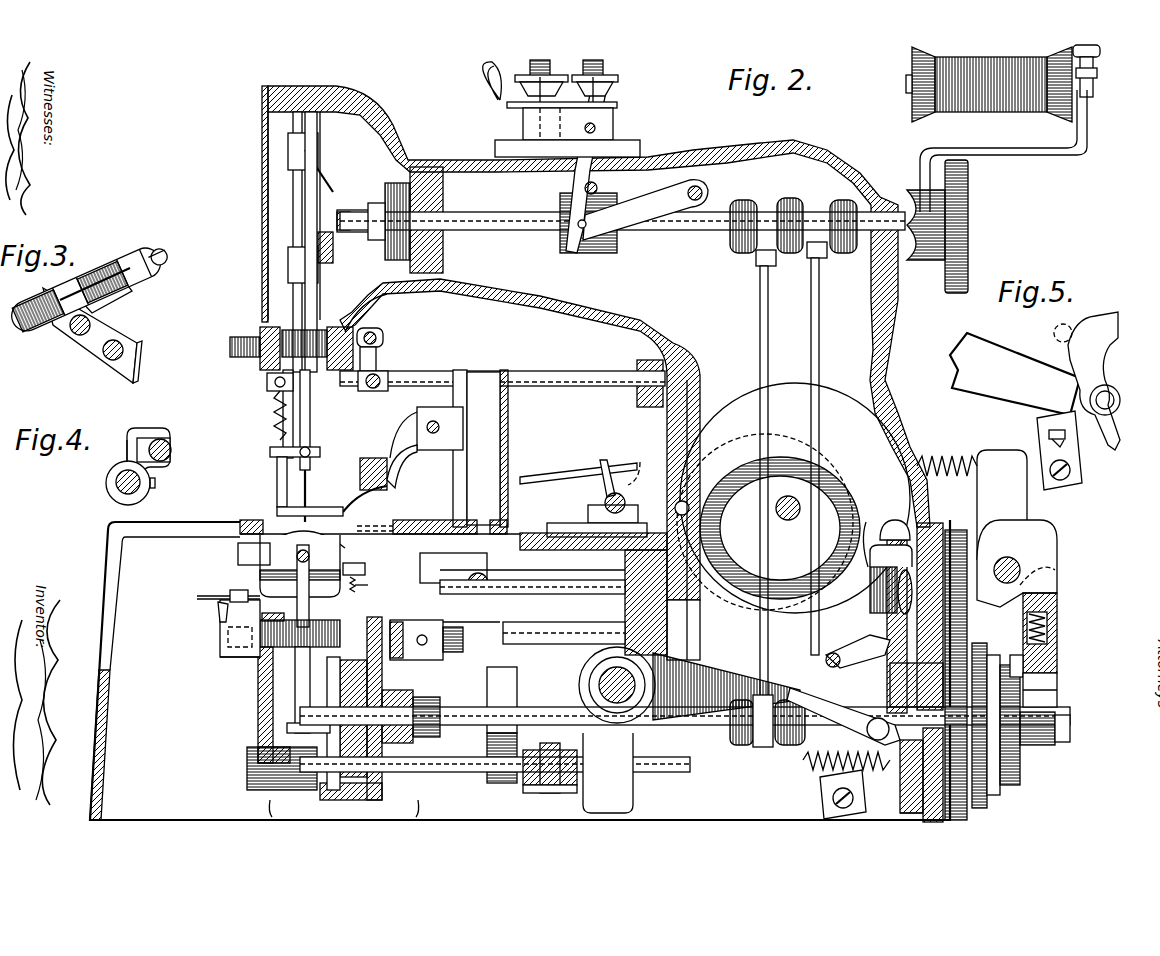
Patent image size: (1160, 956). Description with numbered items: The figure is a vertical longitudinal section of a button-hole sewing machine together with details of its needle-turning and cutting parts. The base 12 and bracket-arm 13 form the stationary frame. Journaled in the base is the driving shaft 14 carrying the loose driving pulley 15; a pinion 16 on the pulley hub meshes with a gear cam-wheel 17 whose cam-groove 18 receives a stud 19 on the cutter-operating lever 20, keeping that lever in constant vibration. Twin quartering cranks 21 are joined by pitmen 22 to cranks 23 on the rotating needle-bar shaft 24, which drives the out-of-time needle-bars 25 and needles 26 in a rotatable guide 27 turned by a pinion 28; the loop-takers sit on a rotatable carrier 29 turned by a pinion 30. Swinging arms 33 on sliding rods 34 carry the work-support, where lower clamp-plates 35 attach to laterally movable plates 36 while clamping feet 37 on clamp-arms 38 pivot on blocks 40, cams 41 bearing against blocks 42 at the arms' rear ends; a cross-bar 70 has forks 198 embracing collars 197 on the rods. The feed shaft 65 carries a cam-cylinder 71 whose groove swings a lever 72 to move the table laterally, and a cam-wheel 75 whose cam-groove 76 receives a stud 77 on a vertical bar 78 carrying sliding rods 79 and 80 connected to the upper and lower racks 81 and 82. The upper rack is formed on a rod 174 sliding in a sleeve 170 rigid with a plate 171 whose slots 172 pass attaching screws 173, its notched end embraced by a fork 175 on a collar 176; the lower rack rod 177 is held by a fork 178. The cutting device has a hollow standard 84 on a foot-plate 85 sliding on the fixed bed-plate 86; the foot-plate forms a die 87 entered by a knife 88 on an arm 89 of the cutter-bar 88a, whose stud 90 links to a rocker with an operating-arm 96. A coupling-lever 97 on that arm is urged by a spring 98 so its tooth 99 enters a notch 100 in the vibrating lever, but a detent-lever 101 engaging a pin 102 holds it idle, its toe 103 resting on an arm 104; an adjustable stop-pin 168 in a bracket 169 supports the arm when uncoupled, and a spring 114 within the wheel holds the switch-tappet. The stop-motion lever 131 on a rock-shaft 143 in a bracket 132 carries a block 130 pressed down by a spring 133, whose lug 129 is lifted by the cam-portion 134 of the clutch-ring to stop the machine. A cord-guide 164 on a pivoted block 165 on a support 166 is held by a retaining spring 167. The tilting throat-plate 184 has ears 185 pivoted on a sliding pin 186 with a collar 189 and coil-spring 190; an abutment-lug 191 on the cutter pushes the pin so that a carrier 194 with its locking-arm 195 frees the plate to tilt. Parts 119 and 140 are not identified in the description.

In FIG. 2, the base 12 is at (520, 670).
In FIG. 2, the bracket-arm 13 is at (596, 343).
In FIG. 2, the main or driving shaft 14 is at (1062, 735).
In FIG. 2, the driving pulley 15 is at (1000, 790).
In FIG. 2, the pinion 16 is at (916, 672).
In FIG. 2, the gear cam-wheel 17 is at (970, 625).
In FIG. 2, the cam-groove 18 is at (1002, 505).
In FIG. 2, the stud 19 is at (913, 555).
In FIG. 2, the cutter-operating lever 20 is at (868, 520).
In FIG. 2, the twin quartering cranks 21 is at (748, 749).
In FIG. 2, the pitmen 22 is at (769, 668).
In FIG. 2, the cranks 23 is at (832, 246).
In FIG. 2, the needle-bar shaft 24 is at (497, 231).
In FIG. 2, the needle-bars 25 is at (307, 214).
In FIG. 2, the needles 26 is at (309, 496).
In FIG. 2, the rotatable guide 27 is at (300, 186).
In FIG. 2, the pinion 28 is at (357, 317).
In FIG. 2, the rotatable carrier 29 is at (300, 700).
In FIG. 2, the pinion 30 is at (280, 653).
In FIG. 2, the swinging arms 33 is at (293, 768).
In FIG. 2, the sliding rods 34 is at (445, 780).
In FIG. 2, the lower clamp-plates 35 is at (245, 522).
In FIG. 2, the plates 36 is at (572, 522).
In FIG. 2, the clamping feet 37 is at (280, 524).
In FIG. 2, the clamp-arms 38 is at (360, 489).
In FIG. 2, the plates or blocks 40 is at (606, 504).
In FIG. 2, the cams 41 is at (635, 463).
In FIG. 2, the blocks 42 is at (603, 470).
In FIG. 2, the feed shaft 65 is at (797, 521).
In FIG. 2, the cross-bar 70 is at (545, 790).
In FIG. 2, the cam-cylinder 71 is at (765, 522).
In FIG. 2, the lever 72 is at (590, 584).
In FIG. 2, the cam-wheel 75 is at (868, 410).
In FIG. 2, the cam-groove 76 is at (722, 462).
In FIG. 2, the pin or stud 77 is at (690, 508).
In FIG. 2, the vertical bar 78 is at (700, 410).
In FIG. 4, the sliding rod 79 is at (143, 491).
In FIG. 2, the sliding rod 79 is at (572, 378).
In FIG. 2, the sliding rod 80 is at (585, 628).
In FIG. 3, the upper rack 81 is at (40, 327).
In FIG. 2, the upper rack 81 is at (240, 357).
In FIG. 2, the lower rack 82 is at (355, 625).
In FIG. 2, the hollow post or standard 84 is at (500, 446).
In FIG. 2, the foot-plate 85 is at (418, 522).
In FIG. 2, the bed-plate 86 is at (532, 569).
In FIG. 2, the throat or die 87 is at (375, 515).
In FIG. 2, the knife or cutter 88 is at (365, 462).
In FIG. 2, the cutter-bar 88a is at (505, 448).
In FIG. 2, the arm 89 is at (423, 432).
In FIG. 2, the stud 90 is at (472, 590).
In FIG. 5, the operating-arm 96 is at (1015, 374).
In FIG. 2, the operating-arm 96 is at (722, 678).
In FIG. 5, the coupling-lever 97 is at (1090, 352).
In FIG. 2, the spring 98 is at (835, 752).
In FIG. 2, the tooth or projection 99 is at (894, 616).
In FIG. 2, the notch 100 is at (891, 590).
In FIG. 2, the detent-lever 101 is at (845, 655).
In FIG. 5, the pin 102 is at (1053, 335).
In FIG. 2, the pin 102 is at (831, 664).
In FIG. 2, the toe 103 is at (882, 785).
In FIG. 2, the arm 104 is at (905, 800).
In FIG. 3, the spring 114 is at (168, 261).
In FIG. 2, the feed bar arm 119 is at (450, 628).
In FIG. 2, the lug or projection 129 is at (1012, 660).
In FIG. 2, the vertically movable block 130 is at (1057, 676).
In FIG. 2, the stop-motion lever 131 is at (1058, 603).
In FIG. 2, the bracket 132 is at (1030, 565).
In FIG. 2, the spring 133 is at (1055, 630).
In FIG. 2, the eccentric or cam-portion 134 is at (1057, 703).
In FIG. 2, the spring 140 is at (946, 463).
In FIG. 2, the rock-shaft 143 is at (1058, 566).
In FIG. 2, the cord-guide 164 is at (218, 605).
In FIG. 2, the block 165 is at (232, 628).
In FIG. 2, the support 166 is at (240, 657).
In FIG. 2, the retaining spring 167 is at (225, 620).
In FIG. 5, the adjustable stop-pin 168 is at (1047, 452).
In FIG. 5, the bracket 169 is at (1066, 490).
In FIG. 2, the bracket 169 is at (826, 792).
In FIG. 3, the sleeve 170 is at (115, 258).
In FIG. 3, the plate or arm 171 is at (95, 347).
In FIG. 3, the holes or slots 172 is at (118, 345).
In FIG. 2, the attaching screws 173 is at (266, 364).
In FIG. 4, the rod 174 is at (172, 450).
In FIG. 2, the rod 174 is at (385, 345).
In FIG. 4, the fork 175 is at (126, 449).
In FIG. 2, the fork 175 is at (380, 362).
In FIG. 4, the collar 176 is at (116, 484).
In FIG. 2, the collar 176 is at (373, 391).
In FIG. 2, the rod 177 is at (395, 655).
In FIG. 2, the fork 178 is at (430, 630).
In FIG. 2, the tilting needle throat-plate 184 is at (303, 530).
In FIG. 2, the ears 185 is at (197, 597).
In FIG. 2, the sliding pin 186 is at (364, 579).
In FIG. 2, the head or collar 189 is at (382, 576).
In FIG. 2, the coil-spring 190 is at (366, 578).
In FIG. 2, the abutment-lug 191 is at (453, 568).
In FIG. 2, the carrier 194 is at (240, 555).
In FIG. 2, the locking-arm 195 is at (258, 562).
In FIG. 2, the collars 197 is at (590, 742).
In FIG. 2, the forks 198 is at (525, 792).